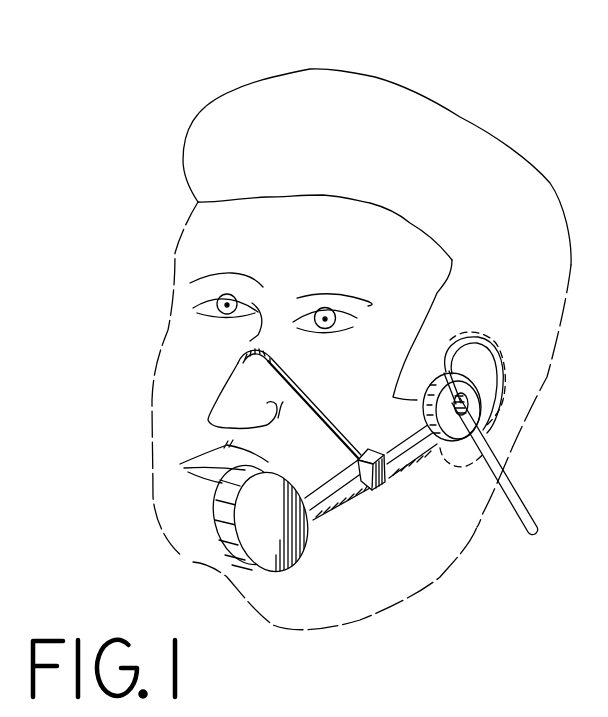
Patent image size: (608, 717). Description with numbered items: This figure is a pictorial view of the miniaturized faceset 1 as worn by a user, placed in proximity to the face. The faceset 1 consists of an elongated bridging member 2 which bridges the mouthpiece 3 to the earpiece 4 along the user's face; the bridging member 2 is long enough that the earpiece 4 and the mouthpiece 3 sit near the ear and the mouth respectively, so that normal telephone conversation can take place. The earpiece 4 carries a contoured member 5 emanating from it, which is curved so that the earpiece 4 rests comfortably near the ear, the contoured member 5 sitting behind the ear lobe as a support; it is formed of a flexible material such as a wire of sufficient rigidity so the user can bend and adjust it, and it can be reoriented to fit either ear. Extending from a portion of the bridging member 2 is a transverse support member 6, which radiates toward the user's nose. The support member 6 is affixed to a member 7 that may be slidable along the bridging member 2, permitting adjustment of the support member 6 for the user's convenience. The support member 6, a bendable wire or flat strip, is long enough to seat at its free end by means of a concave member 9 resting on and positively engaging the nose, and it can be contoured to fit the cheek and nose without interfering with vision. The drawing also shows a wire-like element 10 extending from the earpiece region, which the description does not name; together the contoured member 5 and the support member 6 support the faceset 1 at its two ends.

The faceset 1 is at (377, 447).
The elongated bridging member 2 is at (293, 462).
The mouthpiece 3 is at (275, 573).
The earpiece 4 is at (487, 375).
The contoured member 5 is at (472, 338).
The transverse support member 6 is at (316, 404).
The member 7 is at (405, 470).
The concave member 9 is at (280, 349).
The rod 10 is at (520, 480).